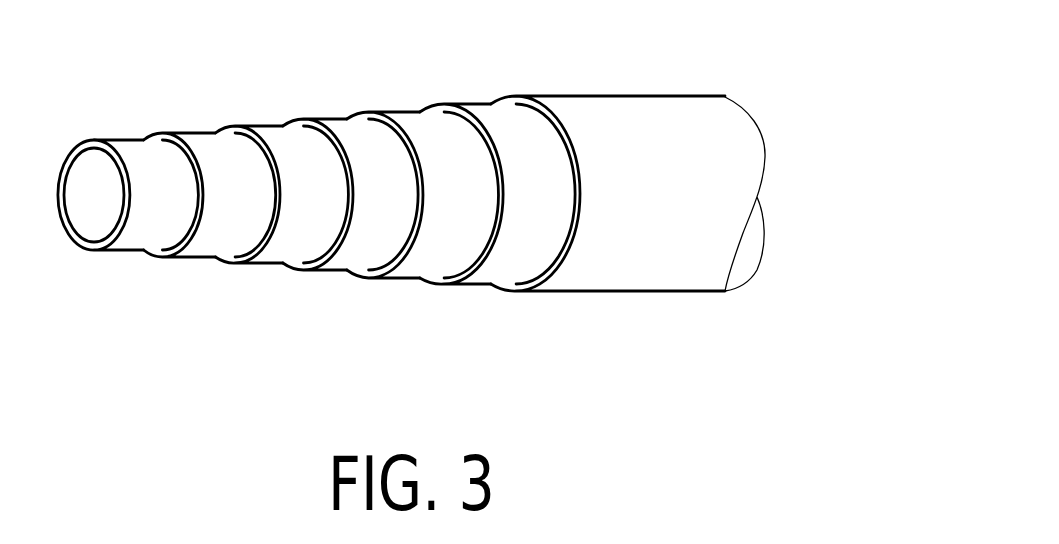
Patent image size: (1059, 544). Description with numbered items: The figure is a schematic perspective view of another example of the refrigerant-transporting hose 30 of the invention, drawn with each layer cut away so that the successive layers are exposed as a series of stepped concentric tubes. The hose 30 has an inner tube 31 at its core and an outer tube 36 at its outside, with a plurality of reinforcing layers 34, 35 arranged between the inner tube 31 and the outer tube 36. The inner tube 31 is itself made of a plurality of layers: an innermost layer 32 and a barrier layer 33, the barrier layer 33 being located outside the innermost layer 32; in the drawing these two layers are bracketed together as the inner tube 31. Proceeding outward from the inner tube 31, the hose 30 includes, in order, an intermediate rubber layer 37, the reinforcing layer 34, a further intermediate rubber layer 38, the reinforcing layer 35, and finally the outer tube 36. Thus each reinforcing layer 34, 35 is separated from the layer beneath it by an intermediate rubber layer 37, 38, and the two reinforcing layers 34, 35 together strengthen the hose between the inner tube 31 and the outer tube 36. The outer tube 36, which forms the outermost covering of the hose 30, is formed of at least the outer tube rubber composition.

The refrigerant-transporting hose 30 is at (411, 208).
The inner tube 31 is at (140, 268).
The innermost layer 32 is at (135, 240).
The barrier layer 33 is at (207, 240).
The intermediate rubber layer 37 is at (293, 245).
The reinforcing layer 34 is at (365, 245).
The intermediate rubber layer 38 is at (445, 243).
The reinforcing layer 35 is at (515, 243).
The outer tube 36 is at (638, 267).